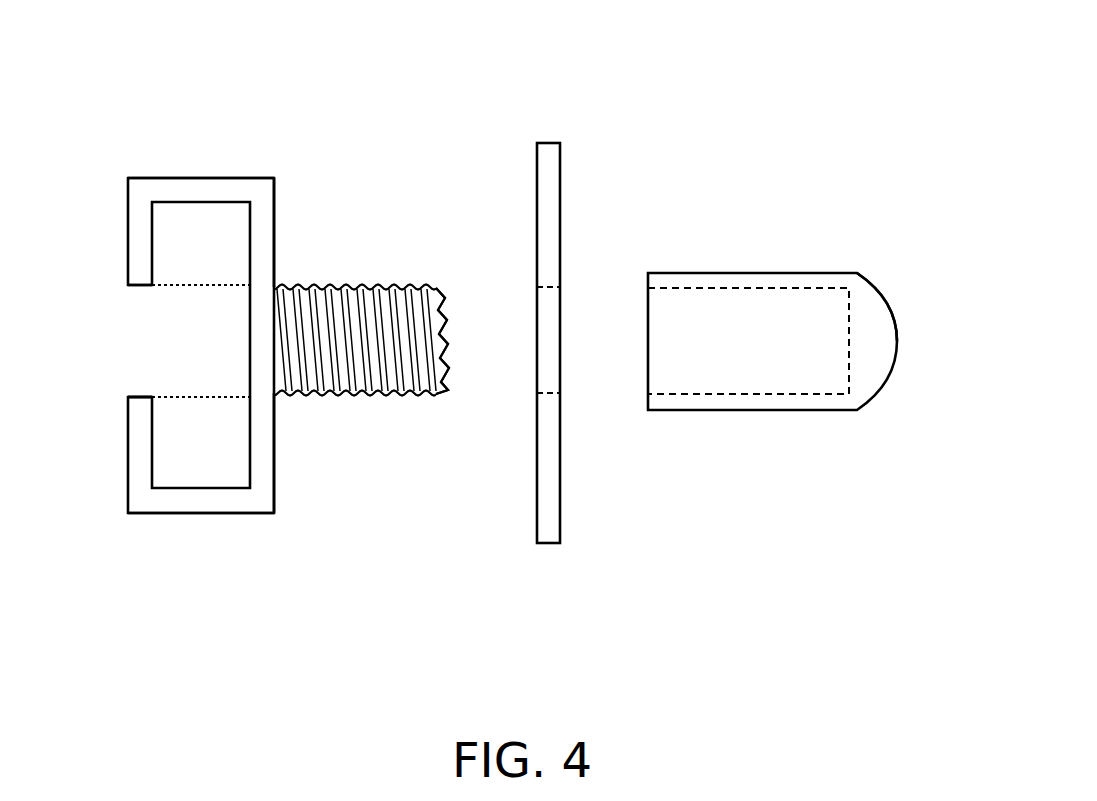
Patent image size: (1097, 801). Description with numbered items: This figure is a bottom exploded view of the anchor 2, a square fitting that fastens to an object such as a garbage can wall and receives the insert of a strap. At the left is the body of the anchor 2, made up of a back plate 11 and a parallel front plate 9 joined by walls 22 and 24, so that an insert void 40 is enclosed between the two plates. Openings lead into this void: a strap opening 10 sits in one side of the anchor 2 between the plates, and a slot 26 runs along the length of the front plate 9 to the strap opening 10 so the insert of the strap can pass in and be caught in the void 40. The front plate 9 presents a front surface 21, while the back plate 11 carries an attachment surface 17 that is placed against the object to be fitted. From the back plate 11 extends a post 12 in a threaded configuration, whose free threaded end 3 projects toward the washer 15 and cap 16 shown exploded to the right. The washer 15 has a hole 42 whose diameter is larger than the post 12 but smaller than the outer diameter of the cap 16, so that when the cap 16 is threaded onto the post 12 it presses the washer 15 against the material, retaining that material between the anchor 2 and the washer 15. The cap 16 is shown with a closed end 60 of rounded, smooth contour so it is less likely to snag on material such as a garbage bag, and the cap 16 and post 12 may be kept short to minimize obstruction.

The anchor 2 is at (692, 60).
The threaded end of shaft 3 is at (441, 395).
The front plate 9 is at (128, 232).
The strap opening 10 is at (213, 357).
The back plate 11 is at (275, 236).
The post 12 is at (375, 287).
The washer 15 is at (561, 215).
The cap 16 is at (718, 272).
The attachment surface 17 is at (275, 453).
The front surface 21 is at (128, 270).
The wall 22 is at (193, 178).
The wall 24 is at (183, 513).
The slot 26 is at (134, 397).
The insert void 40 is at (213, 455).
The hole 42 is at (540, 288).
The closed end 60 is at (879, 283).